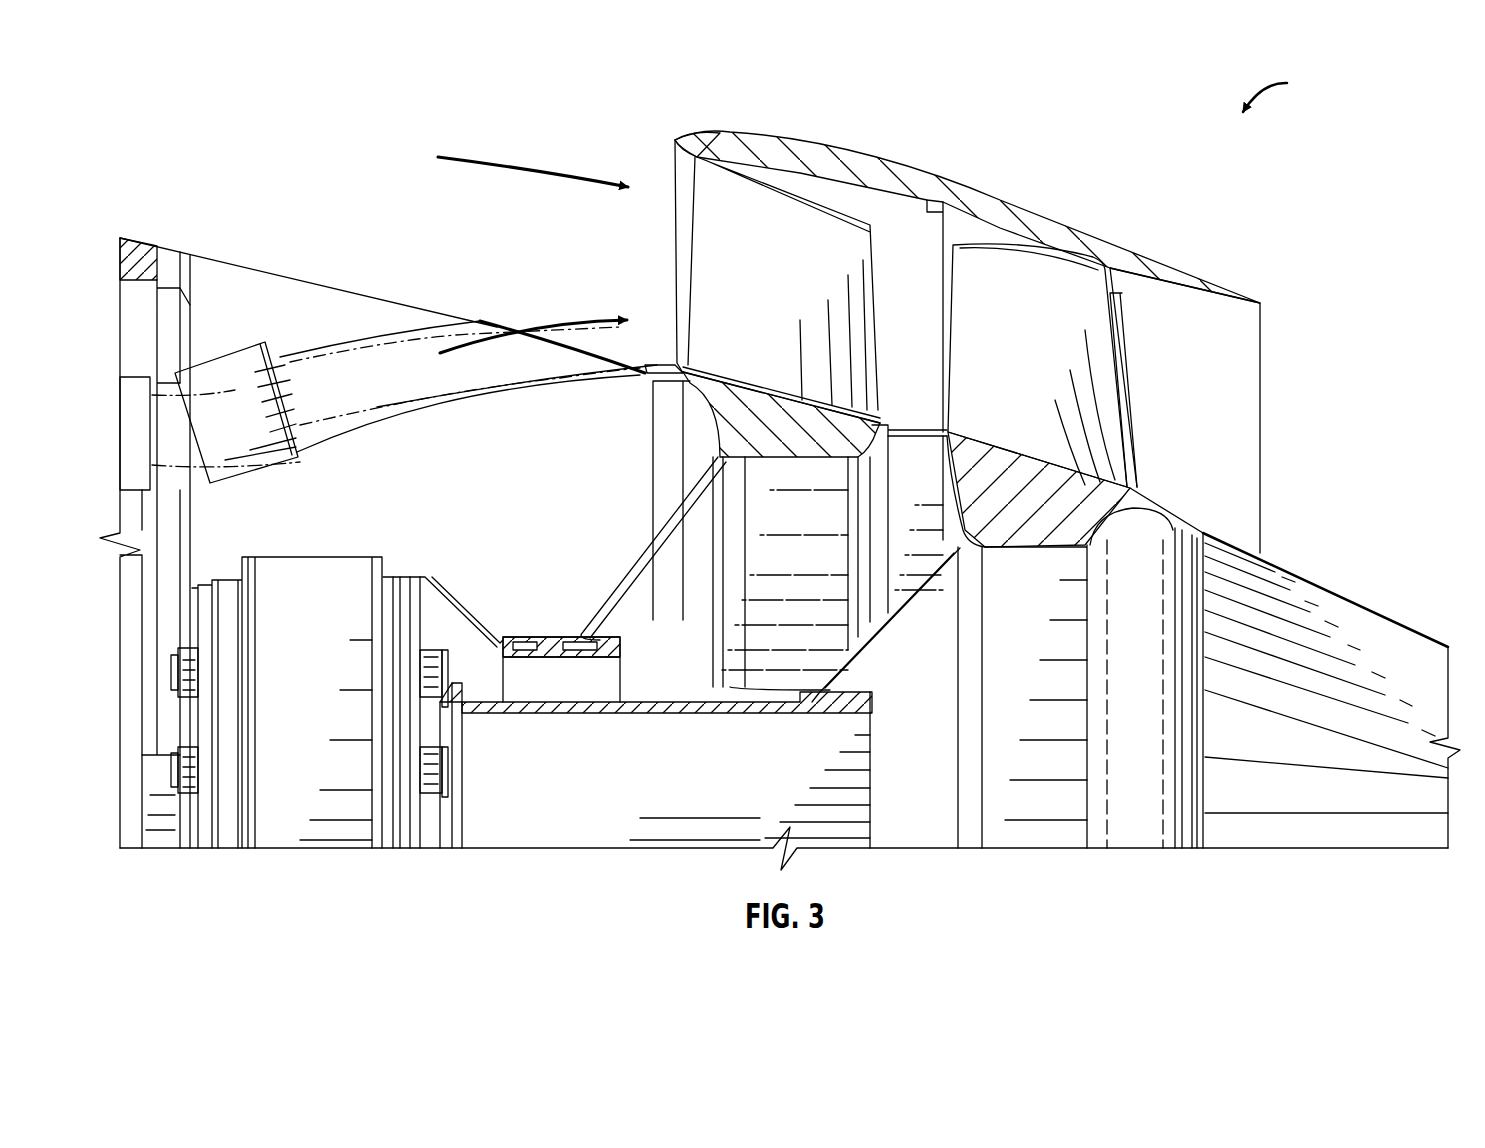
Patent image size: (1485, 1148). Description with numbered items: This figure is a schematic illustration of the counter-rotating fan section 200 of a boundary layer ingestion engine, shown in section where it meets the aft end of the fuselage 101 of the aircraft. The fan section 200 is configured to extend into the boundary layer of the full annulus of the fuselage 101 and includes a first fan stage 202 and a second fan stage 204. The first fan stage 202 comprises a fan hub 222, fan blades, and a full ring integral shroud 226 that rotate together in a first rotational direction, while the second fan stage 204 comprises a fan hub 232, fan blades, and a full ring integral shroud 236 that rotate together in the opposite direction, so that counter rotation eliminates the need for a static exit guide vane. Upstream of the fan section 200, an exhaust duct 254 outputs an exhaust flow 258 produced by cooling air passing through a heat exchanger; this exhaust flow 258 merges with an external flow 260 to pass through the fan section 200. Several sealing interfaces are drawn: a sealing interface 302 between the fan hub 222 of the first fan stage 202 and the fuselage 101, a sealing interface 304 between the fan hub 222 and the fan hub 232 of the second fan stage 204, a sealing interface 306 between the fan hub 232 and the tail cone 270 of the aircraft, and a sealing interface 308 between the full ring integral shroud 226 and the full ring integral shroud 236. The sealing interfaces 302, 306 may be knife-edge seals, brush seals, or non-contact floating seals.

The fuselage 101 is at (305, 270).
The fan section 200 is at (1288, 87).
The first fan stage 202 is at (707, 138).
The second fan stage 204 is at (1210, 290).
The fan hub 222 is at (722, 390).
The full ring integral shroud 226 is at (790, 140).
The fan hub 232 is at (1007, 465).
The full ring integral shroud 236 is at (1040, 215).
The exhaust duct 254 is at (473, 320).
The exhaust flow 258 is at (553, 323).
The external flow 260 is at (453, 160).
The tail cone 270 is at (1320, 586).
The sealing interface 302 is at (667, 373).
The sealing interface 304 is at (893, 410).
The sealing interface 306 is at (1203, 533).
The sealing interface 308 is at (928, 195).